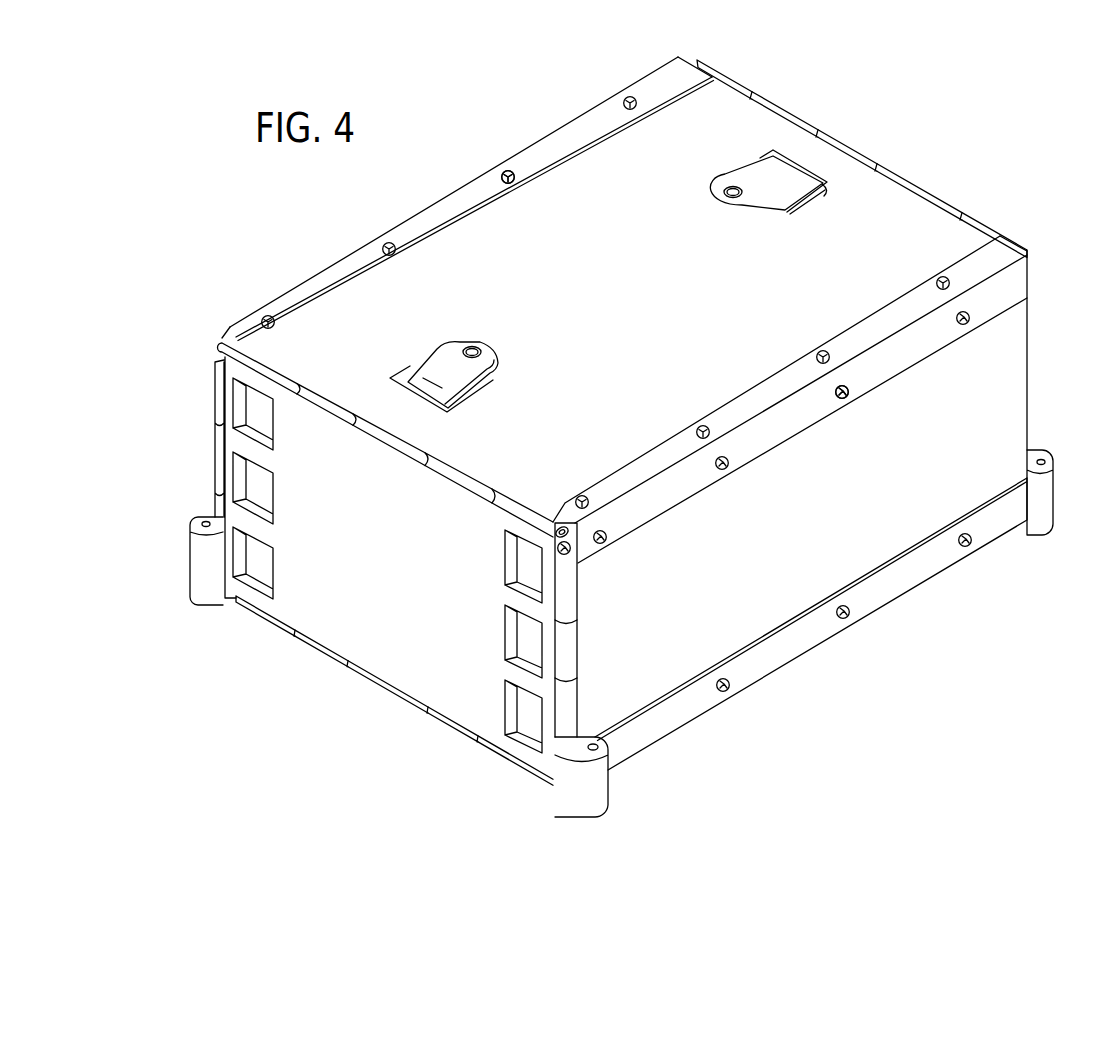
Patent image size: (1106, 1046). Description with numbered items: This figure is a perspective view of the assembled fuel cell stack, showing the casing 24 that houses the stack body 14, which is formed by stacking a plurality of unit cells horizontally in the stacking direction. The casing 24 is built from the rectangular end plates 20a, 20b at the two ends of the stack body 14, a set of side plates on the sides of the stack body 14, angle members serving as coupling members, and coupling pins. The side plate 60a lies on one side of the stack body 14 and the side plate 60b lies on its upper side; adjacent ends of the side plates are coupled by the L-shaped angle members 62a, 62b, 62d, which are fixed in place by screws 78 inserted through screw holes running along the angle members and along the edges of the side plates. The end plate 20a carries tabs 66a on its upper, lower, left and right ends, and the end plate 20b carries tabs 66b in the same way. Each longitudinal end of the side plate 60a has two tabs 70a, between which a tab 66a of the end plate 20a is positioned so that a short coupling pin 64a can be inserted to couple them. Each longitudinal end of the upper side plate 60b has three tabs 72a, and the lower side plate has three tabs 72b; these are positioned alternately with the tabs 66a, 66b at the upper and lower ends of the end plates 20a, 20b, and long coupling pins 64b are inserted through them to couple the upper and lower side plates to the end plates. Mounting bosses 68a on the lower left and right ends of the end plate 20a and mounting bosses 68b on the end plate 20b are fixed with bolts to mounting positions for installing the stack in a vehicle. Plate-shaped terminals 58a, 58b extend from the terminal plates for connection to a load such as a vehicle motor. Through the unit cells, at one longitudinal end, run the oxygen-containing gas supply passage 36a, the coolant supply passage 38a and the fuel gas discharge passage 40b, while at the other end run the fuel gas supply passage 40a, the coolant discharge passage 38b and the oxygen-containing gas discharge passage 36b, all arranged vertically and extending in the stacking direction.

The stack body 14 is at (615, 296).
The end plate 20a is at (427, 655).
The end plate 20b is at (954, 200).
The casing 24 is at (434, 207).
The oxygen-containing gas supply passage 36a is at (246, 407).
The oxygen-containing gas discharge passage 36b is at (522, 702).
The coolant supply passage 38a is at (246, 480).
The coolant discharge passage 38b is at (522, 632).
The fuel gas supply passage 40a is at (522, 561).
The fuel gas discharge passage 40b is at (246, 556).
The terminal 58a is at (468, 342).
The terminal 58b is at (720, 182).
The side plate 60a is at (1005, 392).
The side plate 60b is at (568, 297).
The angle member 62a is at (783, 386).
The angle member 62b is at (556, 140).
The angle member 62d is at (905, 578).
The coupling pin 64a is at (585, 552).
The coupling pin 64b is at (562, 526).
The tab 66a is at (321, 409).
The tab 66b is at (785, 108).
The mounting boss 68a is at (196, 578).
The mounting boss 68b is at (1049, 502).
The tab 70a is at (571, 593).
The tab 72a is at (743, 86).
The tab 72b is at (268, 622).
The screw 78 is at (505, 171).